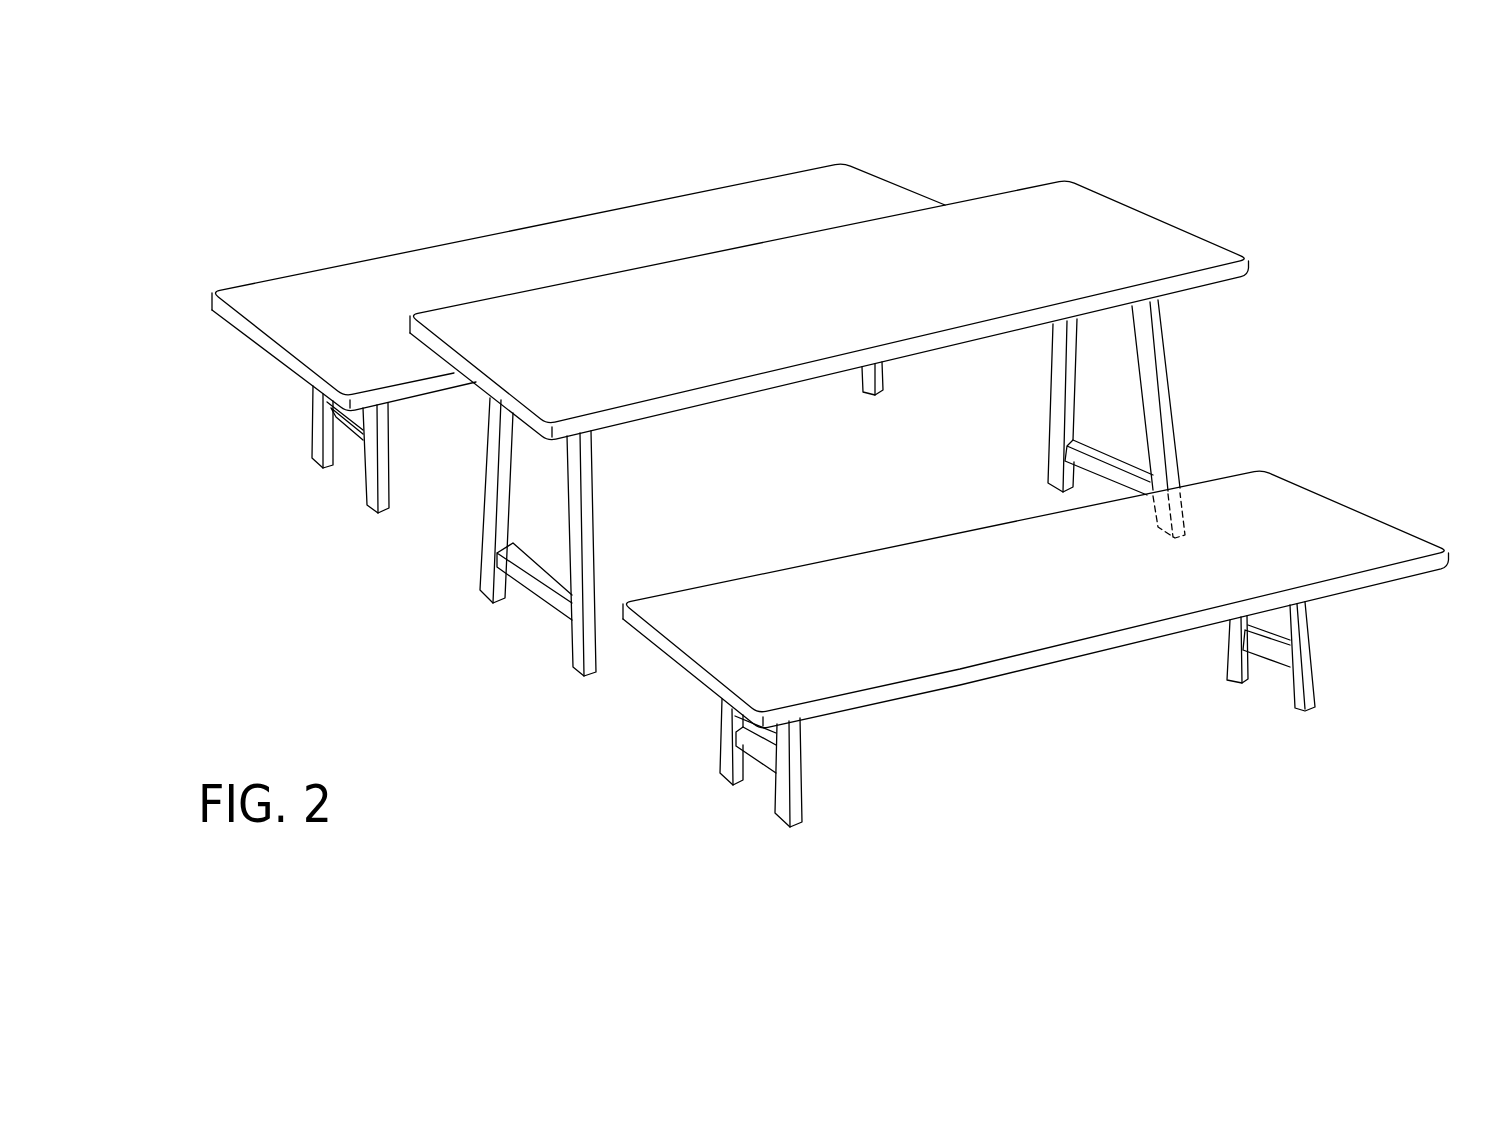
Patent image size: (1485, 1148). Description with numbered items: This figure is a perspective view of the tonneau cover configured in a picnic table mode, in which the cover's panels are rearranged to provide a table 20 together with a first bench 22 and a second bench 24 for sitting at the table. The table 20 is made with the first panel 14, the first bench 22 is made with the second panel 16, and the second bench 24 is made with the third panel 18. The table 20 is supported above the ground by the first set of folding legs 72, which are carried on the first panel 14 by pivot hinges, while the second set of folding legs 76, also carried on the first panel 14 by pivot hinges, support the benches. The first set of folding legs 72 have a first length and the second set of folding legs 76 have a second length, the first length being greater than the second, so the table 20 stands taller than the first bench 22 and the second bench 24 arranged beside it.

The first panel 14 is at (1137, 225).
The second panel 16 is at (1323, 517).
The third panel 18 is at (305, 338).
The table 20 is at (806, 430).
The first bench 22 is at (850, 600).
The second bench 24 is at (546, 287).
The first set of folding legs 72 is at (578, 642).
The second set of folding legs 76 is at (797, 783).